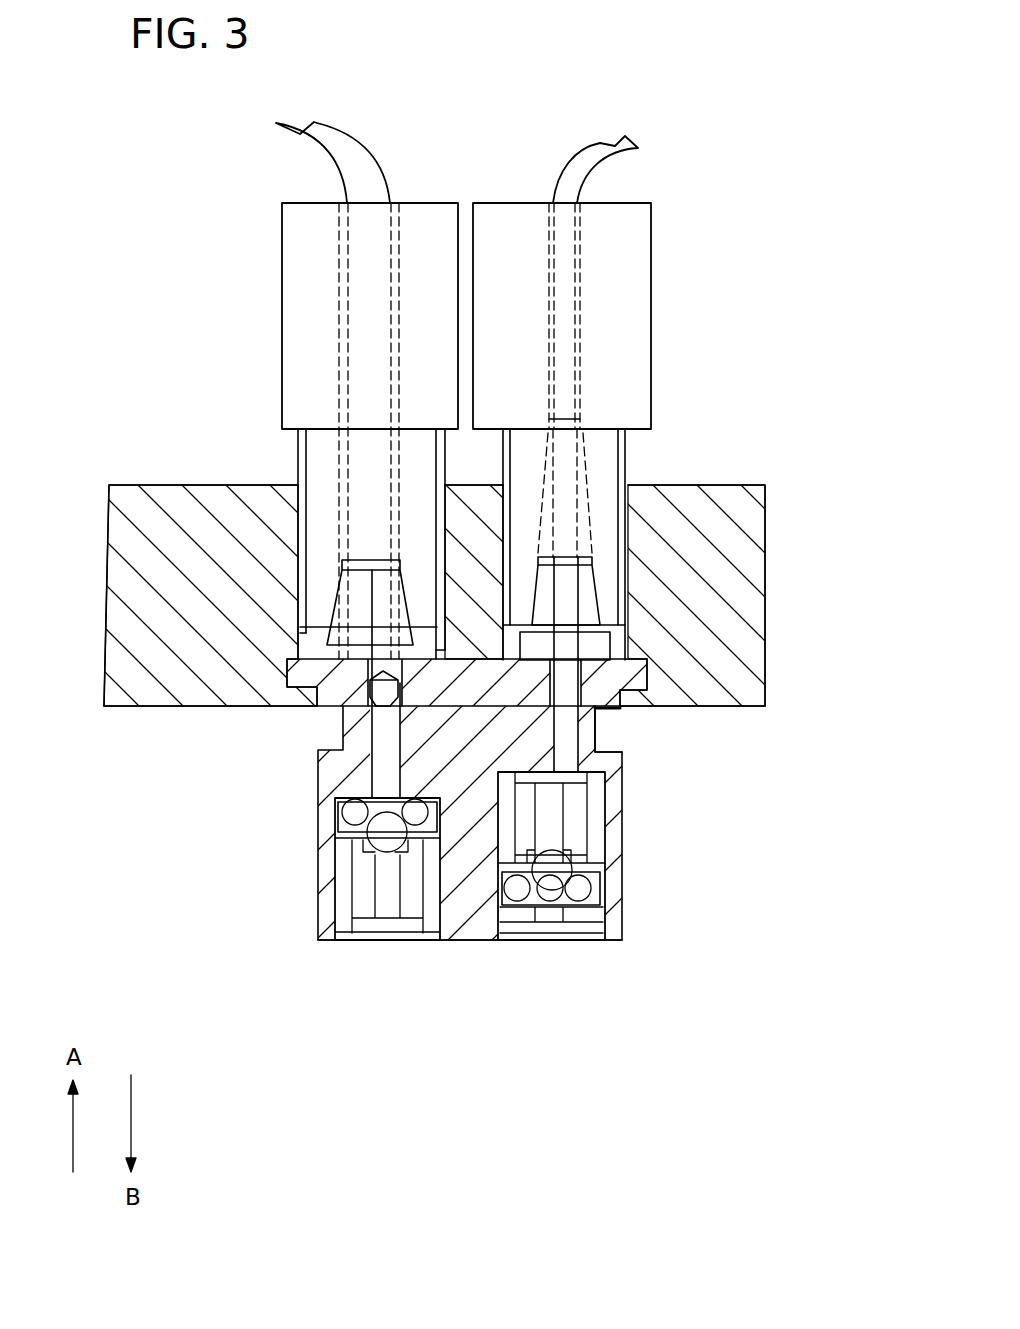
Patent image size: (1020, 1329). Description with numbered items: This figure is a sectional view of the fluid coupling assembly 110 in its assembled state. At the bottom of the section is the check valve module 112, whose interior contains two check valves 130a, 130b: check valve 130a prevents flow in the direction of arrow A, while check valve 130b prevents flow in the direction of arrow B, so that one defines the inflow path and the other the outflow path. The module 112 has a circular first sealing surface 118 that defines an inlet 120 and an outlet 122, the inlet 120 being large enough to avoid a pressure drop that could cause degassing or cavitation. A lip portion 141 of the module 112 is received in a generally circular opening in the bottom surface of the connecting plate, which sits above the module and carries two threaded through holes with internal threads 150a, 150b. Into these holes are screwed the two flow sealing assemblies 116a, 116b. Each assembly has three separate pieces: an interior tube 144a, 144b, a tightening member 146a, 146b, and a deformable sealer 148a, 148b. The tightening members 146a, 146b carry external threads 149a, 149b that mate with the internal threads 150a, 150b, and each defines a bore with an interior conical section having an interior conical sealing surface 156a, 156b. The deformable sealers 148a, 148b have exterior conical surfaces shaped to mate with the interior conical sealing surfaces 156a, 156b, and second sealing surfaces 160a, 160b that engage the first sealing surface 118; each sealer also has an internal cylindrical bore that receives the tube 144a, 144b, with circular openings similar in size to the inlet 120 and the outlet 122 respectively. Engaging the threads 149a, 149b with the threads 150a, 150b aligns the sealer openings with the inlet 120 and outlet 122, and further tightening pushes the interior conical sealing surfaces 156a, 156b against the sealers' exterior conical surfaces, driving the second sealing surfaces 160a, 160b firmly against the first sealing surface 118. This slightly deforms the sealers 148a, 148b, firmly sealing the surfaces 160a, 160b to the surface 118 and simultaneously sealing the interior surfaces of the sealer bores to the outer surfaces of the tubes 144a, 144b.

The fluid coupling assembly 110 is at (162, 209).
The check valve module 112 is at (318, 793).
The flow sealing assembly 116a is at (92, 217).
The flow sealing assembly 116b is at (830, 217).
The first sealing surface 118 is at (470, 690).
The inlet 120 is at (368, 697).
The outlet 122 is at (605, 707).
The check valve 130a is at (385, 908).
The check valve 130b is at (548, 897).
The lip portion 141 is at (632, 672).
The interior tube 144a is at (380, 165).
The interior tube 144b is at (553, 182).
The tightening member 146a is at (282, 255).
The tightening member 146b is at (651, 257).
The deformable sealer 148a is at (323, 640).
The deformable sealer 148b is at (595, 612).
The external threads 149a is at (300, 470).
The external threads 149b is at (625, 470).
The internal threads 150a is at (285, 485).
The internal threads 150b is at (625, 491).
The interior conical sealing surface 156a is at (330, 617).
The interior conical sealing surface 156b is at (600, 590).
The second sealing surface 160a is at (372, 712).
The second sealing surface 160b is at (590, 712).